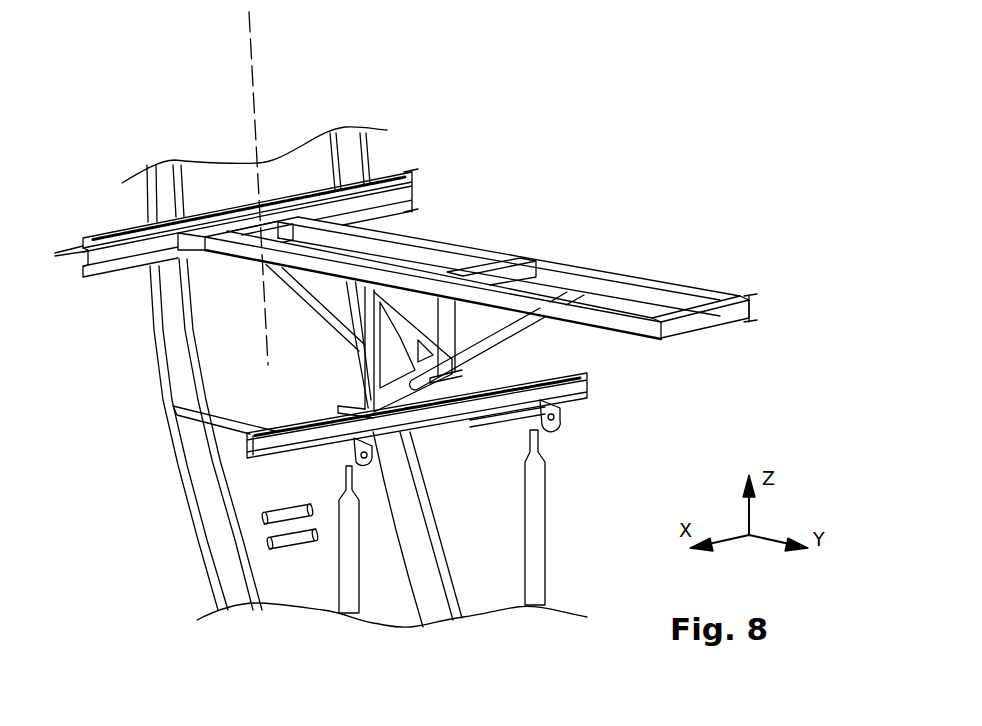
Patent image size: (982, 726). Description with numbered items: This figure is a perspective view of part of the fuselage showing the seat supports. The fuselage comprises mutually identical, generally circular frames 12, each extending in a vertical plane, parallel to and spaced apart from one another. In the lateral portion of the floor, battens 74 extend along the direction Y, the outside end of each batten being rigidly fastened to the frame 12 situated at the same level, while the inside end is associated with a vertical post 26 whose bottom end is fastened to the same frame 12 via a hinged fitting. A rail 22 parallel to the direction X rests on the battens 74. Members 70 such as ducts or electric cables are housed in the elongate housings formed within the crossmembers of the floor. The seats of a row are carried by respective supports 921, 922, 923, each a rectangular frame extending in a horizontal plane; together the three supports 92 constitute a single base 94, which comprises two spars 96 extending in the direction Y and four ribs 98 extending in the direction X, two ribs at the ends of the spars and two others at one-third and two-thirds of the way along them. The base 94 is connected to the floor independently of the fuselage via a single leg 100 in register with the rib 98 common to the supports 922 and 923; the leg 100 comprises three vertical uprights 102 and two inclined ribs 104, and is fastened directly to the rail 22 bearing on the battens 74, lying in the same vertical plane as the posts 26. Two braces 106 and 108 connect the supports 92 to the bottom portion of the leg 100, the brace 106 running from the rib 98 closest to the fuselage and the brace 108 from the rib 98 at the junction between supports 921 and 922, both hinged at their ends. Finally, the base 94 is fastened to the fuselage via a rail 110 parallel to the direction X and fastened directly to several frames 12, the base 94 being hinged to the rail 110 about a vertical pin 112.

The frame 12 is at (177, 342).
The rail 22 is at (563, 397).
The post 26 is at (533, 560).
The members 70 is at (285, 512).
The batten 74 is at (233, 437).
The supports 92 is at (402, 261).
The first support 921 is at (670, 298).
The second support 922 is at (512, 266).
The third support 923 is at (397, 243).
The base 94 is at (406, 259).
The spar 96 is at (647, 288).
The rib 98 is at (285, 230).
The leg 100 is at (388, 375).
The vertical uprights 102 is at (360, 317).
The ribs 104 is at (377, 377).
The brace 106 is at (293, 283).
The brace 108 is at (528, 325).
The rail 110 is at (383, 173).
The vertical pin 112 is at (252, 43).